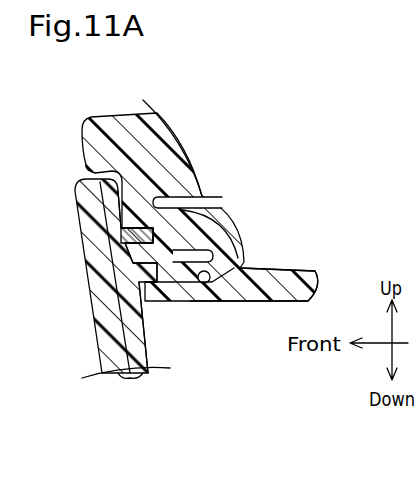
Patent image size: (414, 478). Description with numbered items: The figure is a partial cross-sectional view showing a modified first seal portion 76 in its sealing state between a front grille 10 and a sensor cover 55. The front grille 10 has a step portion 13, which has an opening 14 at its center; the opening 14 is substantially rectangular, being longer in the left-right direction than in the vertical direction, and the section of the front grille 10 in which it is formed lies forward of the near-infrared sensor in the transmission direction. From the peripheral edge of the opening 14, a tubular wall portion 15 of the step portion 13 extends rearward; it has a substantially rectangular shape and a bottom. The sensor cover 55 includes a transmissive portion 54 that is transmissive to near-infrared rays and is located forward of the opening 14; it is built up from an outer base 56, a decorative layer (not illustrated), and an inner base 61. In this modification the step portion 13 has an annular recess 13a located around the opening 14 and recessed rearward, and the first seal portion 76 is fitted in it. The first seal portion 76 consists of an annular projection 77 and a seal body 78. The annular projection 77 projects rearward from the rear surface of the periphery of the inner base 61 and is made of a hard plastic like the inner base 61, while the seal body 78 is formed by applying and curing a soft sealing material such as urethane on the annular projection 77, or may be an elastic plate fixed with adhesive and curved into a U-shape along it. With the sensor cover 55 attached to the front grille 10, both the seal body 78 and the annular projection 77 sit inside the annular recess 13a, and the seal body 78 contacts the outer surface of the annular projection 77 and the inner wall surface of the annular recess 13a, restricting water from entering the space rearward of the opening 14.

The front grille 10 is at (110, 127).
The step portion 13 is at (97, 171).
The annular recess 13a is at (200, 281).
The opening 14 is at (157, 298).
The tubular wall portion 15 is at (288, 271).
The transmissive portion 54 is at (127, 379).
The sensor cover 55 is at (155, 397).
The outer base 56 is at (103, 347).
The inner base 61 is at (143, 345).
The first seal portion 76 is at (209, 164).
The annular projection 77 is at (215, 234).
The seal body 78 is at (243, 250).